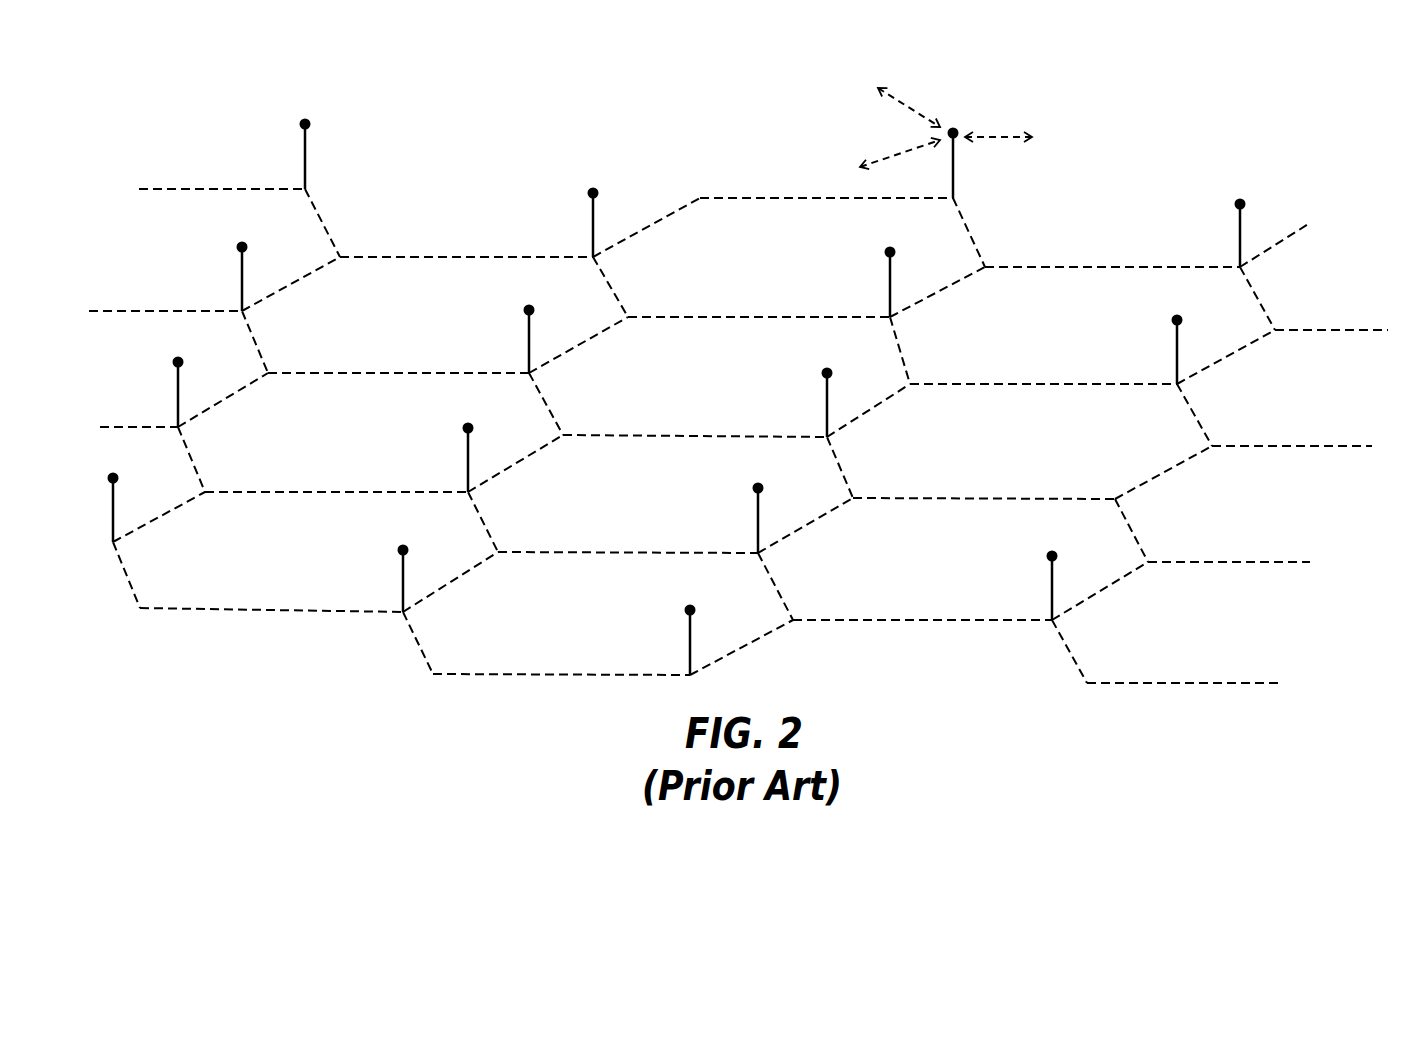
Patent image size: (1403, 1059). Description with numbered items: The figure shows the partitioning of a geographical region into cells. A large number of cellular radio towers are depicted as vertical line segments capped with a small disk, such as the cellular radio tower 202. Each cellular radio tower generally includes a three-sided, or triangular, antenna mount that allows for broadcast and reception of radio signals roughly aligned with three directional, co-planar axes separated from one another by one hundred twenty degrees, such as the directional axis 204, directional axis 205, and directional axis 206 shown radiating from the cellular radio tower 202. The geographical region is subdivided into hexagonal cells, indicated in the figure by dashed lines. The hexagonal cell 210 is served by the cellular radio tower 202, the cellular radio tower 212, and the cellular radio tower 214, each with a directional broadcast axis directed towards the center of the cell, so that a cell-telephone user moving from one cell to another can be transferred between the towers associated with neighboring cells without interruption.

The cellular radio tower 202 is at (956, 175).
The directional axis 204 is at (904, 104).
The directional axis 205 is at (1002, 139).
The directional axis 206 is at (903, 150).
The hexagonal cell 210 is at (760, 222).
The cellular radio tower 212 is at (889, 288).
The cellular radio tower 214 is at (592, 222).